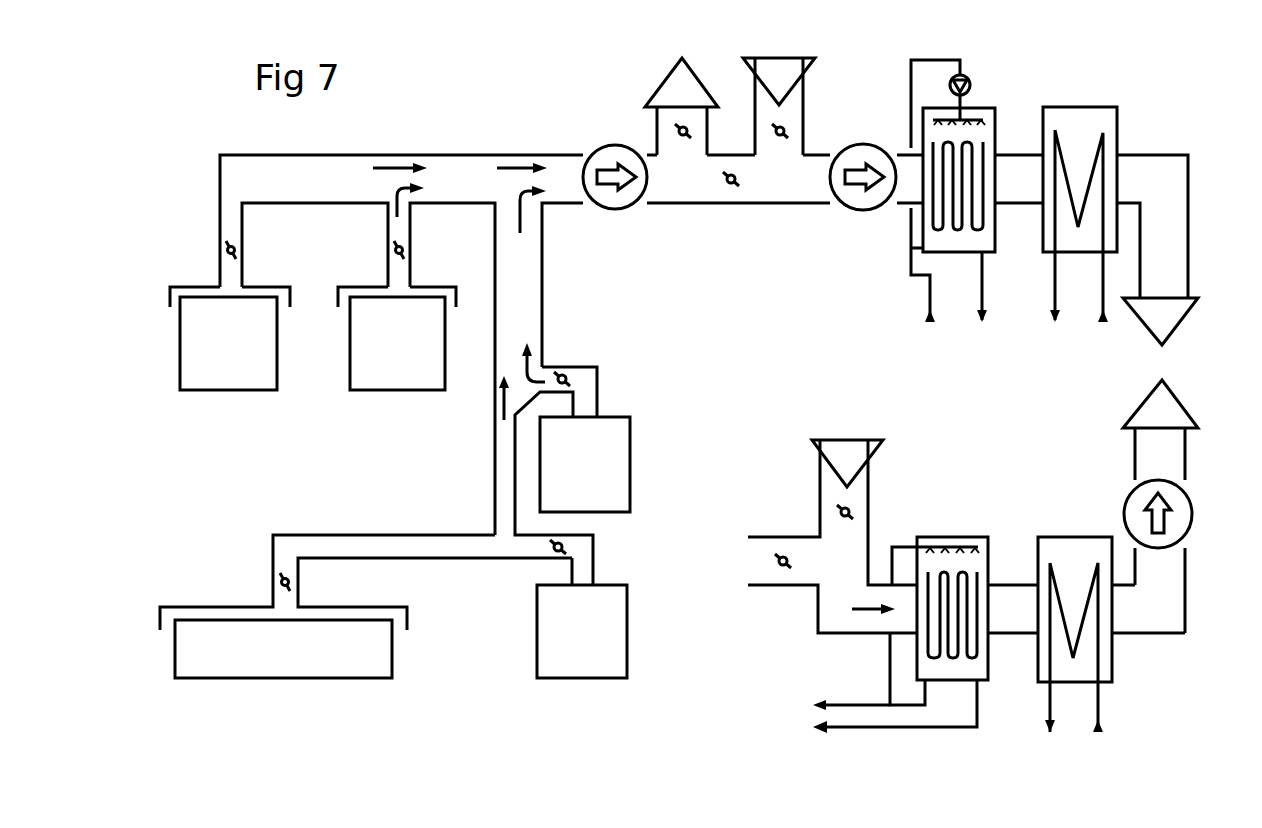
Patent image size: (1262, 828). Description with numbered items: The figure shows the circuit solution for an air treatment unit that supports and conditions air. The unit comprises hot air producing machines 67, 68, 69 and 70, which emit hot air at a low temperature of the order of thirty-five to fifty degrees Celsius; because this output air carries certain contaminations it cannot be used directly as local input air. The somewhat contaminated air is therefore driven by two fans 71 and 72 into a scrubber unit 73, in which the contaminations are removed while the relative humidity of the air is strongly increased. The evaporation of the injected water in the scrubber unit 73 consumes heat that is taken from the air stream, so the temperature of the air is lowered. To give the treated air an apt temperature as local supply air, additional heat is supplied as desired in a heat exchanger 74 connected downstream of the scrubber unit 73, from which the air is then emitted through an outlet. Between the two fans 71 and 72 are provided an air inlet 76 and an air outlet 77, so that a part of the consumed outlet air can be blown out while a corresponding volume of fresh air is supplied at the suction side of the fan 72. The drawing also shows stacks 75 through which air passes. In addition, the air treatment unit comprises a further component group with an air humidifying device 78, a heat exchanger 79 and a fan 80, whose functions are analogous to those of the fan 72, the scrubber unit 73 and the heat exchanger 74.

The hot air producing machine 67 is at (230, 378).
The hot air producing machine 68 is at (395, 378).
The hot air producing machine 69 is at (222, 632).
The hot air producing machine 70 is at (620, 447).
The fan 71 is at (612, 203).
The fan 72 is at (857, 205).
The scrubber unit 73 is at (987, 130).
The heat exchanger 74 is at (1103, 120).
The stack 75 is at (1157, 325).
The air inlet 76 is at (800, 68).
The air outlet 77 is at (660, 86).
The air humidifying device 78 is at (953, 535).
The heat exchanger 79 is at (1055, 543).
The fan 80 is at (1135, 507).